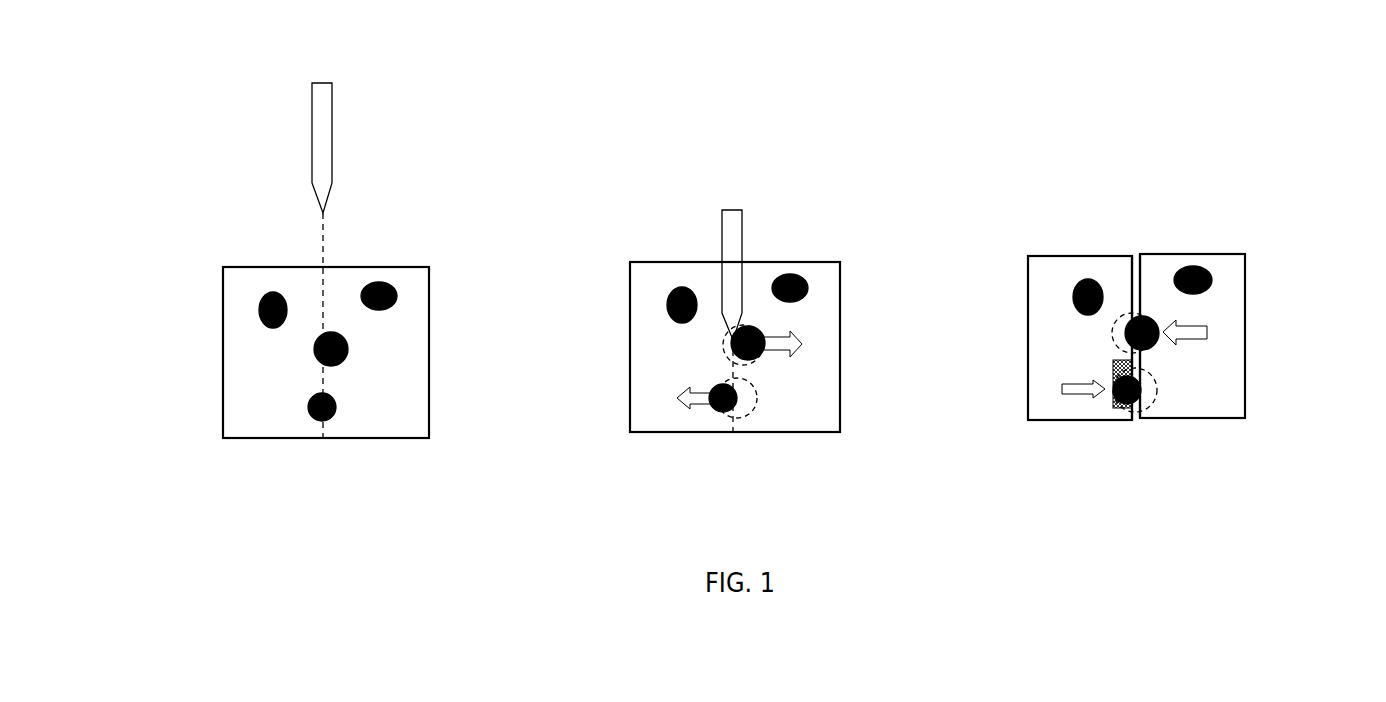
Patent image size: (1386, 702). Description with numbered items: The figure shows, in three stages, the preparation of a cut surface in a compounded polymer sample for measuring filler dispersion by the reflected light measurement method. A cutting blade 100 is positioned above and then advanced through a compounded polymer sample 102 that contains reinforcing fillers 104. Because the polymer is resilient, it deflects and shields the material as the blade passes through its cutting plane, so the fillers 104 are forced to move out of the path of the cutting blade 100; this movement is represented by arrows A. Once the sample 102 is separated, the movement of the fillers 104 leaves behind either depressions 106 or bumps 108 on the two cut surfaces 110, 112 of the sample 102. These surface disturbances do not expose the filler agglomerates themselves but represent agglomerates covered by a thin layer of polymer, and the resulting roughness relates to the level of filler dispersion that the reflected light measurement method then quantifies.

The cutting blade 100 is at (605, 254).
The compounded polymer sample 102 is at (789, 324).
The reinforcing fillers 104 is at (649, 347).
The depressions 106 is at (1216, 401).
The bumps 108 is at (1059, 436).
The cut surface 110 is at (1058, 306).
The cut surface 112 is at (1205, 288).
The arrows A is at (892, 417).